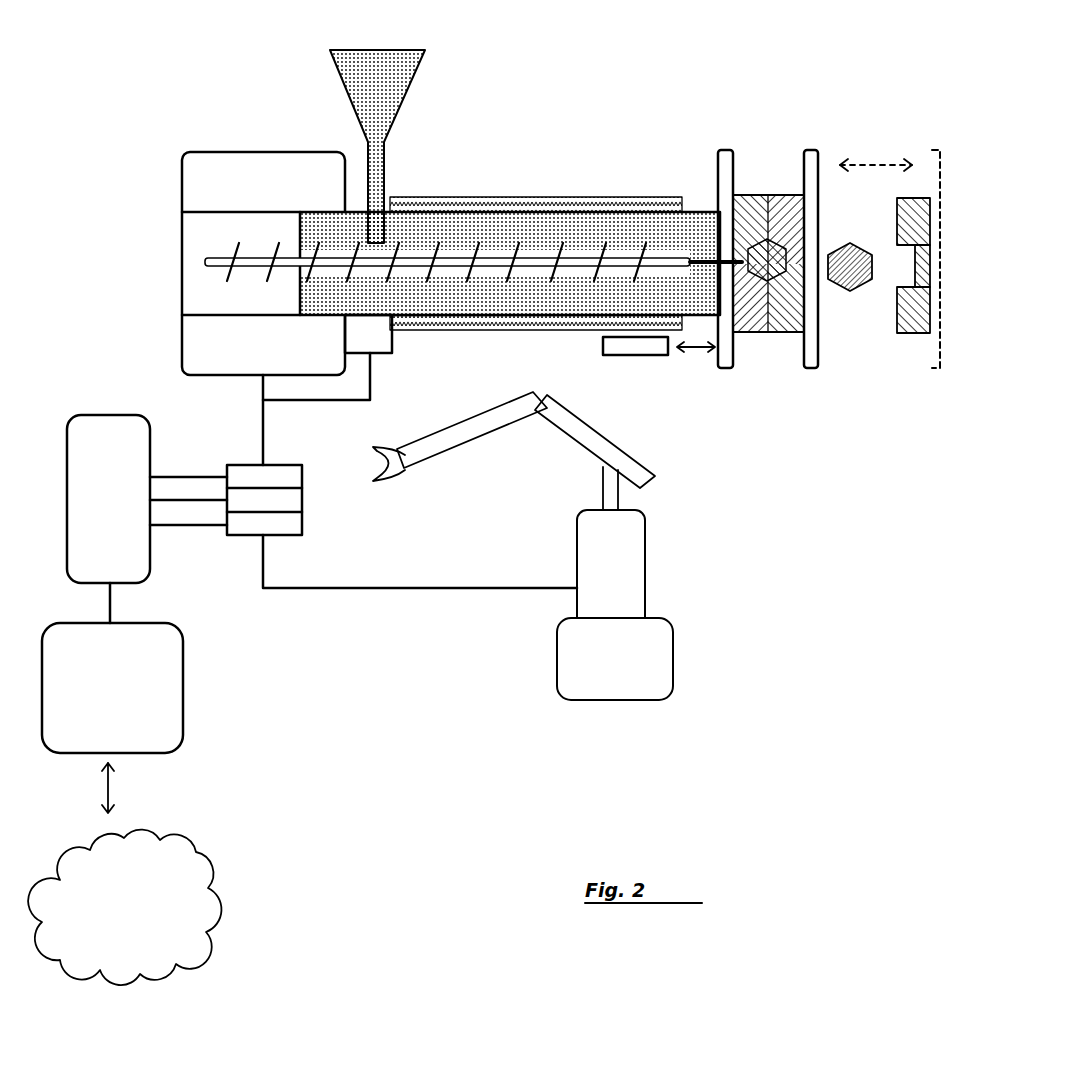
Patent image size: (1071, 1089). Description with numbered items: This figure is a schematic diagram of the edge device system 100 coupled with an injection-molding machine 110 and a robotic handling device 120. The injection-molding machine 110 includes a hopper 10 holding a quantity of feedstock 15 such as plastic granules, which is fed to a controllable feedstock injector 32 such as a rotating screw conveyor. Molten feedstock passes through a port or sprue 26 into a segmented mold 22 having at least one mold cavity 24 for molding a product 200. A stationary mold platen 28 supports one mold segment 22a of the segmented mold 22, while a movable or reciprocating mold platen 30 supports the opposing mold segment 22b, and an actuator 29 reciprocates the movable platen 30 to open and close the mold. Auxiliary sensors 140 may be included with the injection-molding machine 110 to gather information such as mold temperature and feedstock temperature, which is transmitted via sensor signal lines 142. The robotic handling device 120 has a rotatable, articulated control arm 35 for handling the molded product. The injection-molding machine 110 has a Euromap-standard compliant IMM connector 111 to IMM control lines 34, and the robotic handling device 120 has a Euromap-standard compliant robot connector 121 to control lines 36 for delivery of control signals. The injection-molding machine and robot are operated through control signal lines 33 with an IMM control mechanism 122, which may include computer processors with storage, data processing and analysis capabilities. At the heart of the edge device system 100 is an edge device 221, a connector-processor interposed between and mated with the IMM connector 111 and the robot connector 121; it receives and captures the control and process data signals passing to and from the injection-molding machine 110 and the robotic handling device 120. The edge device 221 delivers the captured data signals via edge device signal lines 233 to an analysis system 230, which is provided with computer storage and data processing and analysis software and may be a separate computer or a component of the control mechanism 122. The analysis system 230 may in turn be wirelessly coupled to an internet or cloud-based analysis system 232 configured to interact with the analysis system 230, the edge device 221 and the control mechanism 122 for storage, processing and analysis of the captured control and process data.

The edge device system 100 is at (140, 152).
The hopper 10 is at (345, 78).
The feedstock 15 is at (385, 85).
The injection-molding machine 110 is at (540, 197).
The controllable feedstock injector 32 is at (200, 260).
The sprue 26 is at (718, 258).
The stationary mold platen 28 is at (727, 150).
The movable mold platen 30 is at (935, 150).
The segmented mold 22 is at (764, 333).
The mold segment 22a is at (747, 337).
The opposing mold segment 22b is at (795, 195).
The mold cavity 24 is at (755, 195).
The product 200 is at (843, 293).
The actuator 29 is at (645, 347).
The auxiliary sensors 140 is at (380, 345).
The sensor signal lines 142 is at (372, 372).
The articulated control arm 35 is at (588, 418).
The robotic handling device 120 is at (628, 645).
The robot control lines 36 is at (302, 590).
The IMM control lines 34 is at (258, 450).
The IMM connector 111 is at (282, 478).
The edge device 221 is at (278, 500).
The robot connector 121 is at (282, 518).
The IMM control mechanism 122 is at (110, 465).
The control signal lines 33 is at (185, 475).
The edge device signal lines 233 is at (185, 500).
The analysis system 230 is at (122, 683).
The cloud-based analysis system 232 is at (118, 895).